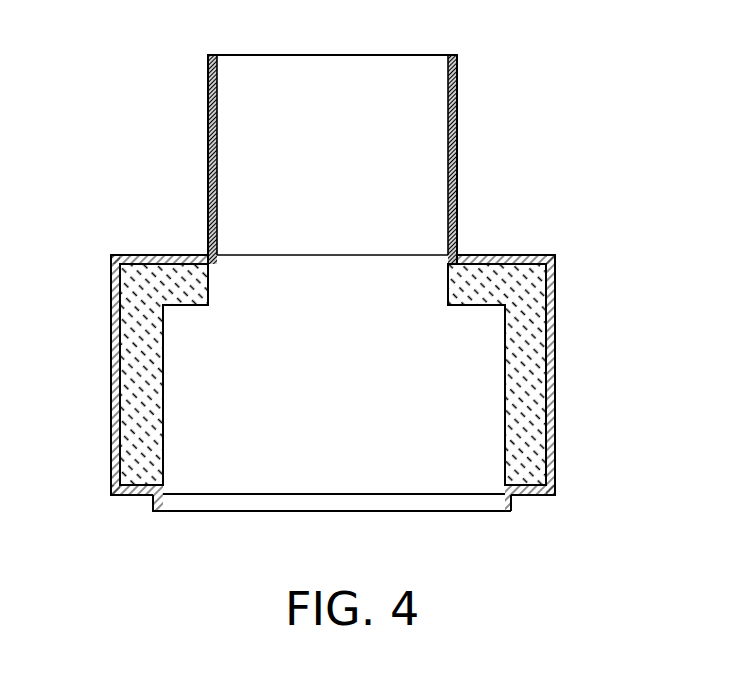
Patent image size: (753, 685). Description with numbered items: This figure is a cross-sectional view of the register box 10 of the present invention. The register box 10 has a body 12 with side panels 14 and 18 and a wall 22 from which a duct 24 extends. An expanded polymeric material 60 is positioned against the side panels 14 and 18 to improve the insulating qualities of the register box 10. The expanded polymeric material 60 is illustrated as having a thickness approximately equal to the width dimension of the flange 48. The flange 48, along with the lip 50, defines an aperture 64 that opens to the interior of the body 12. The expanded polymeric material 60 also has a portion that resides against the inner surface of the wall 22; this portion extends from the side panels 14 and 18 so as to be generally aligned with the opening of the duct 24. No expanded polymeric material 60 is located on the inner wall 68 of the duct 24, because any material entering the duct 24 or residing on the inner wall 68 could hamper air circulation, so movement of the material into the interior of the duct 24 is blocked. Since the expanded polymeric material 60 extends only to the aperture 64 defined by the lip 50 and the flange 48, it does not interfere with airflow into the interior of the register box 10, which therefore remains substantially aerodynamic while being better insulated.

The register box 10 is at (537, 138).
The body 12 is at (556, 313).
The side panel 14 is at (556, 420).
The side panel 18 is at (113, 378).
The wall 22 is at (500, 253).
The duct 24 is at (208, 190).
The flange 48 is at (538, 500).
The lip 50 is at (163, 500).
The expanded polymeric material 60 is at (197, 292).
The aperture 64 is at (333, 500).
The inner wall 68 is at (217, 122).